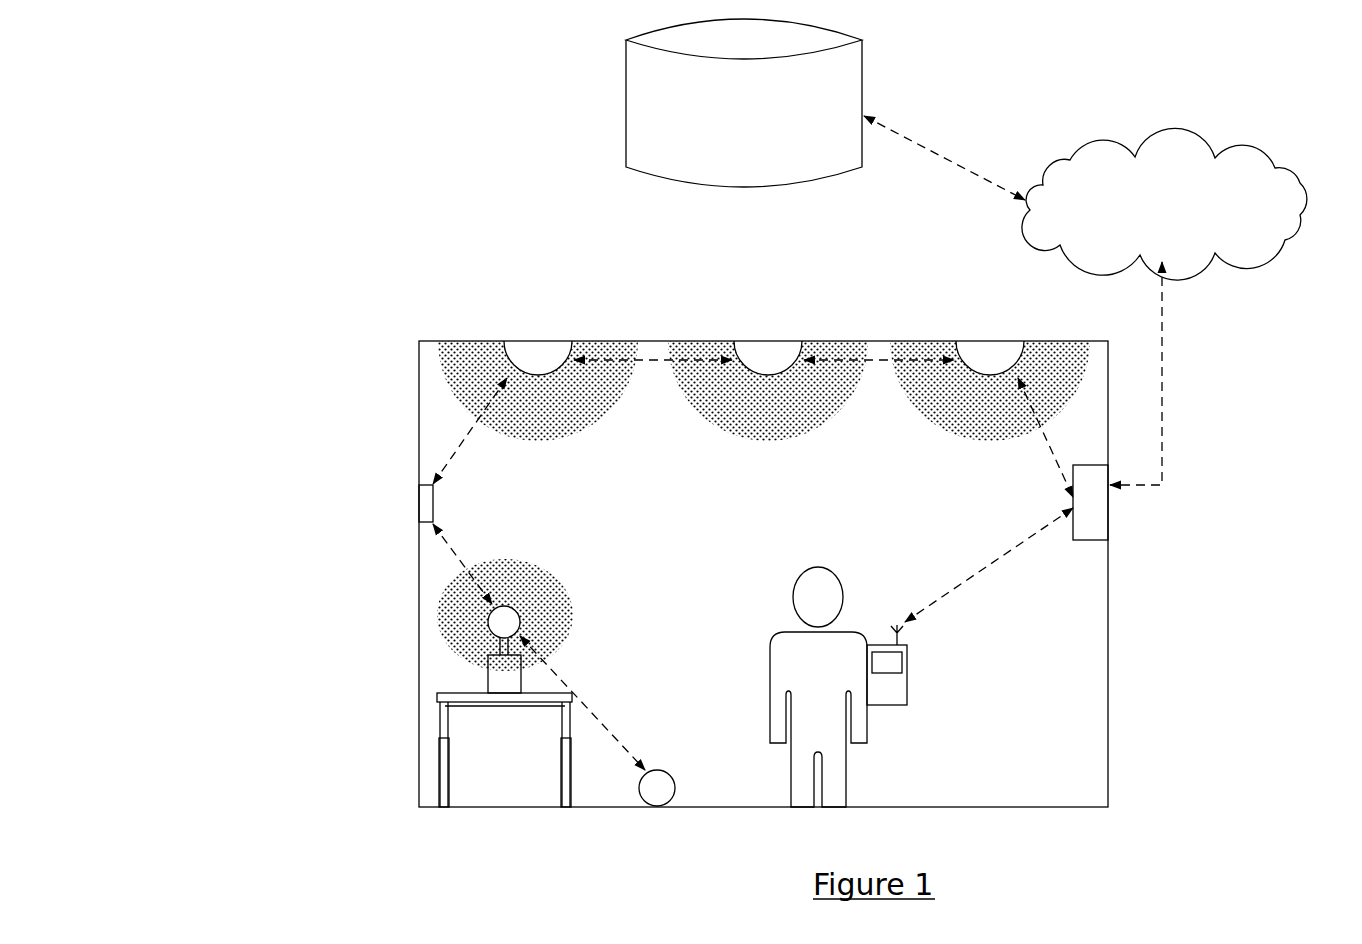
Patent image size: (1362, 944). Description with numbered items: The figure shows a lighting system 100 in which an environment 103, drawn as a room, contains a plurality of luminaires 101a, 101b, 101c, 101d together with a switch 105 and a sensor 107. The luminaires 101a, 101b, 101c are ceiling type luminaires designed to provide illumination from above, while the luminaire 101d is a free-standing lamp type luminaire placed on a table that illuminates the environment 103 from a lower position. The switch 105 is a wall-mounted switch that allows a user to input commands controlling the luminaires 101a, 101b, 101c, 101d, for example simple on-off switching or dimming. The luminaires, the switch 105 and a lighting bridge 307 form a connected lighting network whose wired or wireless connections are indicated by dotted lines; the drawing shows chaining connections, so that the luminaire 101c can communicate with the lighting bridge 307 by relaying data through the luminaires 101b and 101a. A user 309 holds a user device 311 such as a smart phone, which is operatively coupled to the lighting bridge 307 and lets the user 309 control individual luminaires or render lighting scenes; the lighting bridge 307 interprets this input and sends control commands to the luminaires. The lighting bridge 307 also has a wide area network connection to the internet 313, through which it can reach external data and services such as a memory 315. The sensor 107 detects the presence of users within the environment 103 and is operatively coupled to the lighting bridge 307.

The system 100 is at (430, 135).
The memory 315 is at (744, 103).
The internet 313 is at (1164, 204).
The environment 103 is at (1109, 622).
The luminaire 101a is at (975, 341).
The luminaire 101b is at (772, 341).
The luminaire 101c is at (542, 341).
The luminaire 101d is at (511, 605).
The switch 105 is at (433, 502).
The sensor 107 is at (640, 807).
The user 309 is at (775, 648).
The user device 311 is at (908, 650).
The lighting bridge 307 is at (1094, 540).